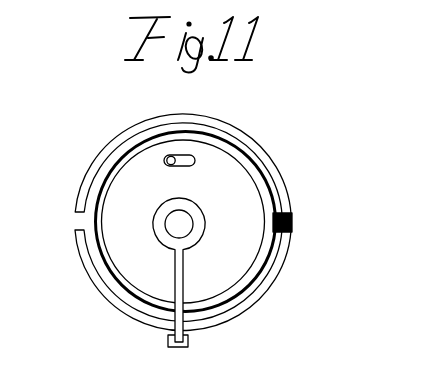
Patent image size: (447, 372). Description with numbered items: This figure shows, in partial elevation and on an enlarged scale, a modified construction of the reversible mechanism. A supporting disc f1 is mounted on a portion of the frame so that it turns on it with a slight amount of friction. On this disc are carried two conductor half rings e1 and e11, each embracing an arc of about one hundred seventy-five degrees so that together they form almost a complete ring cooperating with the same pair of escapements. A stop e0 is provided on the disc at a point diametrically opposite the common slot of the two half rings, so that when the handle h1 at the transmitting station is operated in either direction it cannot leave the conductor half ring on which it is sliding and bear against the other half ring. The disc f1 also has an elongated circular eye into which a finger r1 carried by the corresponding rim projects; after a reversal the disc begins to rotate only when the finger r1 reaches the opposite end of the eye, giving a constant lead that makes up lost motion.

The conductor half ring e1 is at (228, 312).
The conductor half ring e11 is at (256, 159).
The stop e0 is at (291, 213).
The supporting disc f1 is at (122, 175).
The finger r1 is at (175, 153).
The handle h1 is at (175, 284).